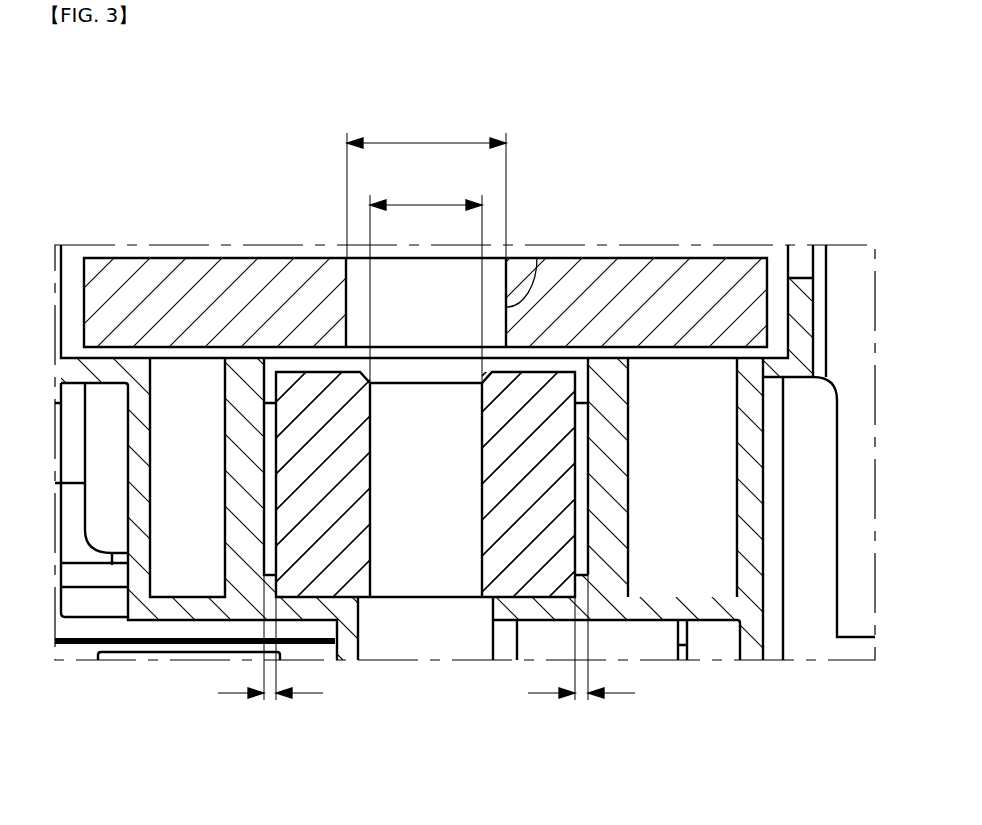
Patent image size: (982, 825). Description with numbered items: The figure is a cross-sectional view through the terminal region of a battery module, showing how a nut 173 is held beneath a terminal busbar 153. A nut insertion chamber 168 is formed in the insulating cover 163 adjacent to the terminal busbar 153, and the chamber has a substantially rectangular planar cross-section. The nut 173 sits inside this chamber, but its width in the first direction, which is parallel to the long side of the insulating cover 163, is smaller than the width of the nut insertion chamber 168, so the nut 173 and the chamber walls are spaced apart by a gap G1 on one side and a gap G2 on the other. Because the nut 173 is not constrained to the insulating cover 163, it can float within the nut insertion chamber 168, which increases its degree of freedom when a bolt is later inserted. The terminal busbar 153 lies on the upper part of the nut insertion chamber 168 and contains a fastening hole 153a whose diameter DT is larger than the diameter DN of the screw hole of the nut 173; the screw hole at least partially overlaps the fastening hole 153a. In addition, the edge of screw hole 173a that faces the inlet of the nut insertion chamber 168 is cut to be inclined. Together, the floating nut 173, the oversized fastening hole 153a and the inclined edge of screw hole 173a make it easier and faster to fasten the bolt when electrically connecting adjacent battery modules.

The terminal busbar 153 is at (673, 280).
The fastening hole 153a is at (537, 258).
The insulating cover 163 is at (169, 607).
The nut insertion chamber 168 is at (583, 480).
The nut 173 is at (522, 565).
The edge of screw hole 173a is at (382, 407).
The gap G1 is at (270, 662).
The gap G2 is at (581, 662).
The diameter of the fastening hole DT is at (426, 177).
The diameter of the screw hole DN is at (426, 273).